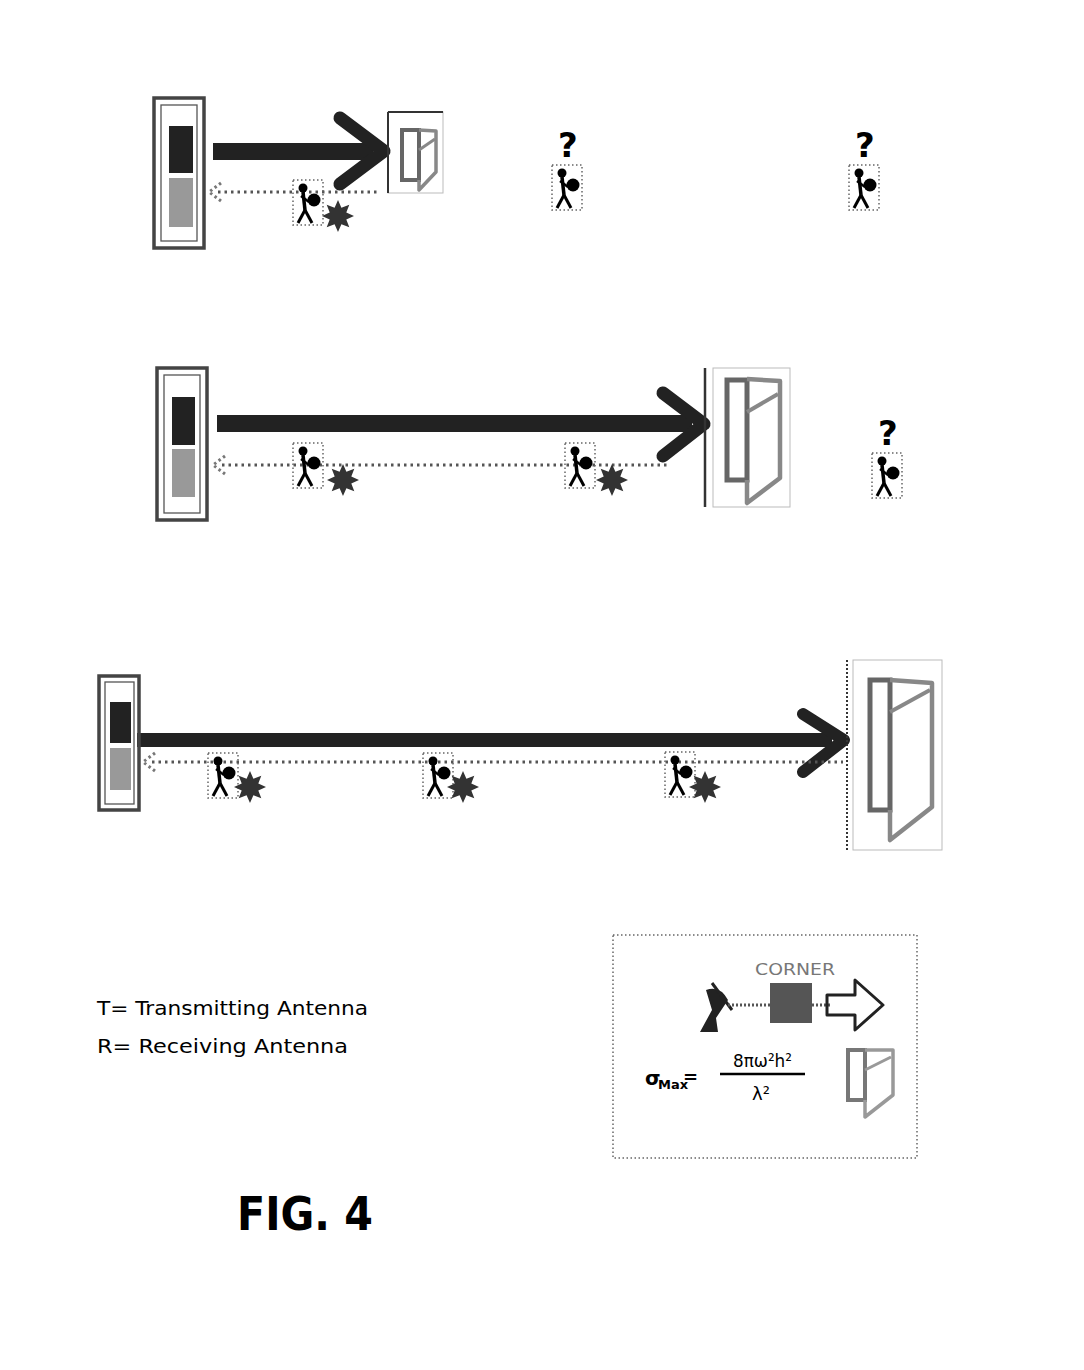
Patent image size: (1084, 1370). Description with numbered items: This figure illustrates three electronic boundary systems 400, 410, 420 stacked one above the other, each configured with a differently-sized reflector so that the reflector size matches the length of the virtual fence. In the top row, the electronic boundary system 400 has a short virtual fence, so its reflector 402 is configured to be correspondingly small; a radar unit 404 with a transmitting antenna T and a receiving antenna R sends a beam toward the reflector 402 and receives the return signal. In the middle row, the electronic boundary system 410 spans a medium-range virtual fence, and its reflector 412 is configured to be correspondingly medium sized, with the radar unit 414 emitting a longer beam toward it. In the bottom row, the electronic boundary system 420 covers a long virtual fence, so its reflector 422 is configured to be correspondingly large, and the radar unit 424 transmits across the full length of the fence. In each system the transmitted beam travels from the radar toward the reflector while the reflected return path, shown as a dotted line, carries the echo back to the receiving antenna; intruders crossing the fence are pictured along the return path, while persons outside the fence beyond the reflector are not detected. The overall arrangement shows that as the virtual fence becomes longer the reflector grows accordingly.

The electronic boundary system 400 is at (439, 46).
The reflector 402 is at (423, 188).
The radar (transmitting and receiving antennas) 404 is at (173, 98).
The electronic boundary system 410 is at (430, 380).
The reflector 412 is at (735, 503).
The radar (transmitting and receiving antennas) 414 is at (182, 368).
The electronic boundary system 420 is at (422, 644).
The reflector 422 is at (887, 838).
The radar (transmitting and receiving antennas) 424 is at (118, 676).